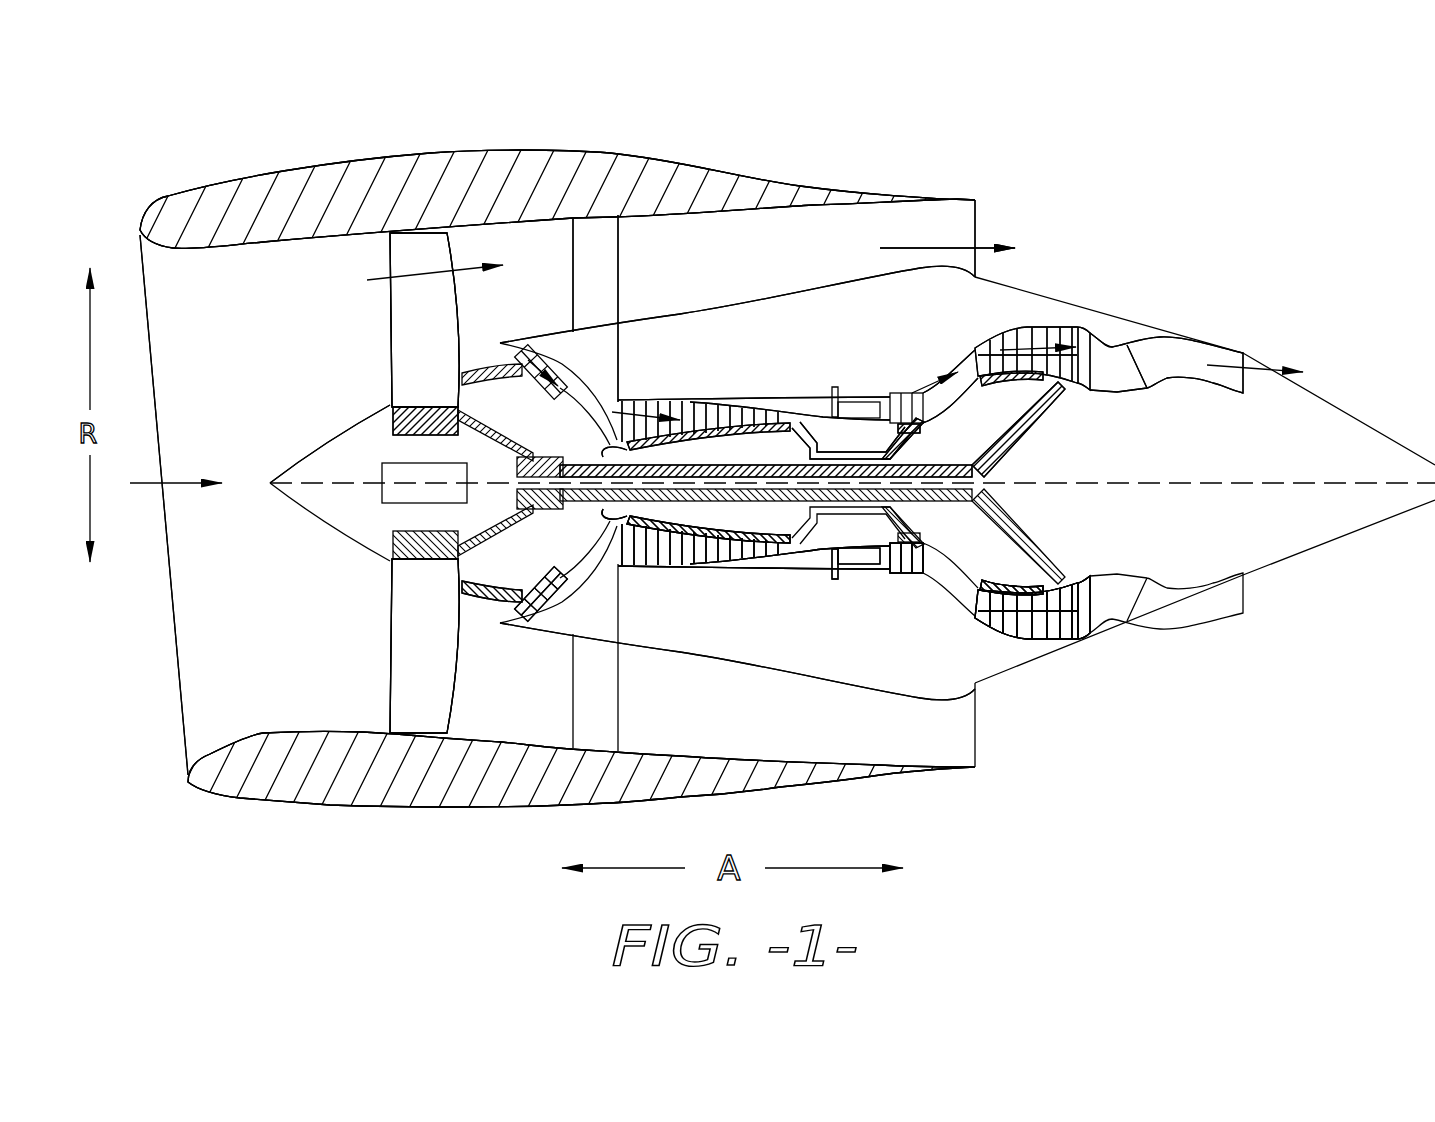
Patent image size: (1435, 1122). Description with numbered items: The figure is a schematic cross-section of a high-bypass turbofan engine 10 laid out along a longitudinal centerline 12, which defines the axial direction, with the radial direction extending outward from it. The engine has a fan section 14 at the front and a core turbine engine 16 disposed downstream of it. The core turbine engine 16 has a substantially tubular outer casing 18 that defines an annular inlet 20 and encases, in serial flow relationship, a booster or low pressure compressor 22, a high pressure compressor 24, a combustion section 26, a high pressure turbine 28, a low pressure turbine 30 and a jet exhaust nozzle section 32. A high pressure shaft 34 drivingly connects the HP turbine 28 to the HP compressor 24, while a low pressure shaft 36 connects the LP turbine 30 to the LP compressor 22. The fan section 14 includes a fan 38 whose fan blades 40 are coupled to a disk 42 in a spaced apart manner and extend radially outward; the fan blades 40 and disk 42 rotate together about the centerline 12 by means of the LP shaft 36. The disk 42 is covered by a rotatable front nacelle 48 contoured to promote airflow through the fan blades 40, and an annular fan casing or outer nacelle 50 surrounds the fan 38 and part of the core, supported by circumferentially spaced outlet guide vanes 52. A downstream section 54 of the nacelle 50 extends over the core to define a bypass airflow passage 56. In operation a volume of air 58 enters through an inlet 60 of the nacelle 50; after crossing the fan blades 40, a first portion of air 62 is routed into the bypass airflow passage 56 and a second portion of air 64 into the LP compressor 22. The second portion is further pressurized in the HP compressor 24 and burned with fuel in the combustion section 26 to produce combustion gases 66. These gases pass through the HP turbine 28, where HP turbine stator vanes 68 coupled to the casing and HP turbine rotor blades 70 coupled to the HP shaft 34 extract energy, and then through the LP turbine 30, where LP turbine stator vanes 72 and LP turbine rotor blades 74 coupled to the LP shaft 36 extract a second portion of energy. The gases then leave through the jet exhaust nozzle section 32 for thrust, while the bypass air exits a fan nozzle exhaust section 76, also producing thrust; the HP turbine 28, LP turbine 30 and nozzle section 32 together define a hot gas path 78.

The turbofan engine 10 is at (1232, 230).
The longitudinal centerline 12 is at (1155, 480).
The fan section 14 is at (478, 138).
The core turbine engine 16 is at (792, 353).
The outer casing 18 is at (814, 677).
The annular inlet 20 is at (512, 607).
The low pressure compressor 22 is at (568, 582).
The high pressure compressor 24 is at (652, 556).
The combustion section 26 is at (850, 568).
The high pressure turbine 28 is at (925, 562).
The low pressure turbine 30 is at (1078, 638).
The jet exhaust nozzle section 32 is at (1246, 355).
The high pressure shaft 34 is at (903, 427).
The low pressure shaft 36 is at (572, 463).
The fan 38 is at (376, 322).
The fan blades 40 is at (388, 673).
The disk 42 is at (391, 420).
The rotatable front nacelle 48 is at (318, 455).
The outer nacelle 50 is at (460, 808).
The outlet guide vanes 52 is at (621, 242).
The downstream section of the nacelle 54 is at (785, 163).
The bypass airflow passage 56 is at (770, 264).
The volume of air 58 is at (170, 475).
The inlet 60 is at (175, 720).
The first portion of air 62 is at (405, 272).
The second portion of air 64 is at (495, 363).
The combustion gases 66 is at (907, 386).
The HP turbine stator vanes 68 is at (895, 572).
The HP turbine rotor blades 70 is at (908, 572).
The LP turbine stator vanes 72 is at (982, 604).
The LP turbine rotor blades 74 is at (997, 615).
The fan nozzle exhaust section 76 is at (978, 231).
The hot gas path 78 is at (963, 353).